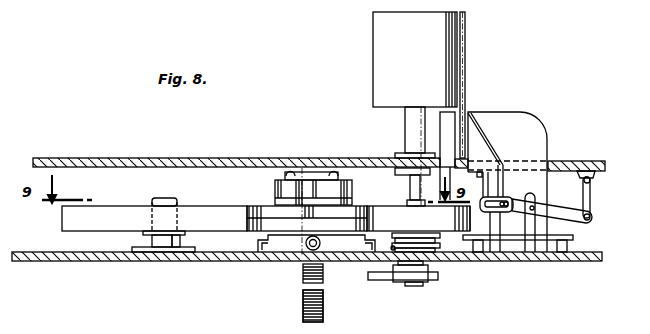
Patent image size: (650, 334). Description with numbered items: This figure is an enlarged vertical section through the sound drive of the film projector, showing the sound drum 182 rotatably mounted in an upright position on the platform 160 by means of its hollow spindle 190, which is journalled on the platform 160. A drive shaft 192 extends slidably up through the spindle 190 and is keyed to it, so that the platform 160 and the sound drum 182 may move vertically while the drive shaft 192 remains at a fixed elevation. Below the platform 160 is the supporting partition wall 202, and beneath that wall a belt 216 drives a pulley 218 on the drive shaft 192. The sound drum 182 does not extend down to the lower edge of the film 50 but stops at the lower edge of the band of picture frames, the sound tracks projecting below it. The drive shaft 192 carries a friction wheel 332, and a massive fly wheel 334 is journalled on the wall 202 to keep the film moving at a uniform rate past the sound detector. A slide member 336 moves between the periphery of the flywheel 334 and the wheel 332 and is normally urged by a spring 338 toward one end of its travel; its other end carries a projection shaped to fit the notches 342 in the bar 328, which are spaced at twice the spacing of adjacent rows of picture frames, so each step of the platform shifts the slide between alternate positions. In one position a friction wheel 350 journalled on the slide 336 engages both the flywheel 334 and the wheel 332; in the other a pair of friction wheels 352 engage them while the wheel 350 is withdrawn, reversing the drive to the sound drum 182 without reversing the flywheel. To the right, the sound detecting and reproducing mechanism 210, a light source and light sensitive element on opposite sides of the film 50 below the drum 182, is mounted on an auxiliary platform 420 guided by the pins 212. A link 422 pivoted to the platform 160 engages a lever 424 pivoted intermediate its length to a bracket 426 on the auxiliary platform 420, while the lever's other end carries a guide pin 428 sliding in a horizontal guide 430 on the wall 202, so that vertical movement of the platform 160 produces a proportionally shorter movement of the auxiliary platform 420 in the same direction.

The film 50 is at (467, 90).
The platform 160 is at (110, 158).
The sound drum 182 is at (386, 44).
The hollow spindle 190 is at (408, 138).
The drive shaft 192 is at (410, 194).
The wall 202 is at (82, 262).
The sound detecting and reproducing mechanism 210 is at (527, 113).
The pins 212 is at (576, 157).
The belt 216 is at (392, 247).
The pulley 218 is at (410, 244).
The bar 328 is at (325, 304).
The friction wheel 332 is at (458, 230).
The fly wheel 334 is at (142, 207).
The slide member 336 is at (288, 188).
The spring 338 is at (306, 265).
The notches 342 is at (306, 312).
The friction wheel 350 is at (268, 227).
The friction wheels 352 is at (337, 210).
The auxiliary platform 420 is at (538, 240).
The link 422 is at (586, 170).
The lever 424 is at (567, 222).
The bracket 426 is at (530, 228).
The guide pin 428 is at (497, 160).
The horizontal guide 430 is at (478, 133).